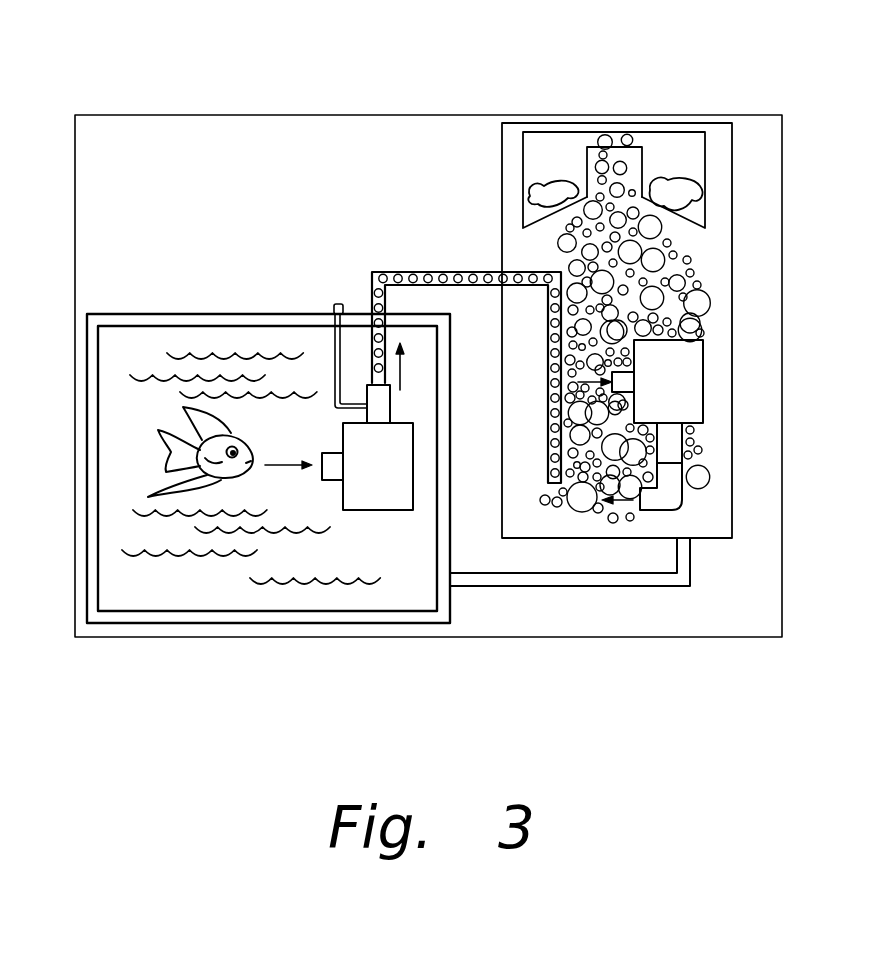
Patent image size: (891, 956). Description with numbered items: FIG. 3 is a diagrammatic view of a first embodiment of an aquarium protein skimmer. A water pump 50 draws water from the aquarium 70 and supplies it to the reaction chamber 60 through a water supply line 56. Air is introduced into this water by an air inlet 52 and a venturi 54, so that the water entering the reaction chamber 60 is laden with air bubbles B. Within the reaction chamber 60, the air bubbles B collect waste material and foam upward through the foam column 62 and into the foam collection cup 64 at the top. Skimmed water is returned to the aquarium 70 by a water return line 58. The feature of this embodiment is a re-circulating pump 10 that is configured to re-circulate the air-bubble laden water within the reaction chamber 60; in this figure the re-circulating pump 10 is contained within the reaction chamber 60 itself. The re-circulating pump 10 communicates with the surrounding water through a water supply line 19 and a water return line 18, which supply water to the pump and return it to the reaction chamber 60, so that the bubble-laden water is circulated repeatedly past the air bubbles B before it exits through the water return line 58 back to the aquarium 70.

The re-circulating pump 10 is at (703, 392).
The water return line 18 is at (673, 493).
The water supply line 19 is at (548, 432).
The water pump 50 is at (378, 511).
The air inlet 52 is at (333, 308).
The venturi 54 is at (390, 404).
The water supply line 56 is at (448, 272).
The water return line 58 is at (595, 587).
The reaction chamber 60 is at (715, 218).
The foam column 62 is at (642, 163).
The foam collection cup 64 is at (557, 155).
The aquarium 70 is at (160, 313).
The air bubbles B is at (712, 300).